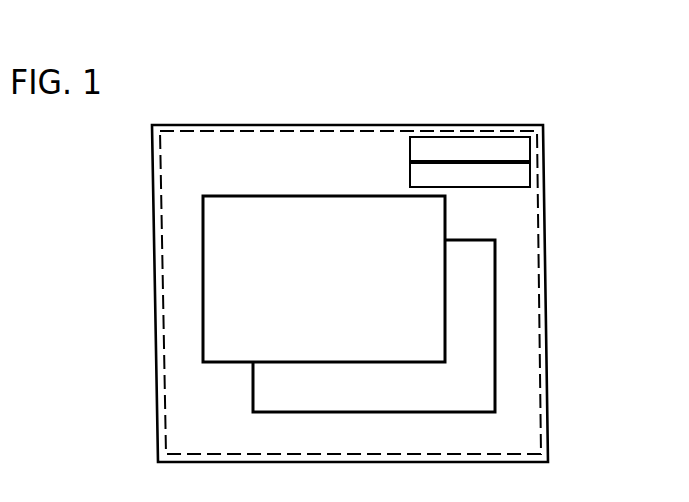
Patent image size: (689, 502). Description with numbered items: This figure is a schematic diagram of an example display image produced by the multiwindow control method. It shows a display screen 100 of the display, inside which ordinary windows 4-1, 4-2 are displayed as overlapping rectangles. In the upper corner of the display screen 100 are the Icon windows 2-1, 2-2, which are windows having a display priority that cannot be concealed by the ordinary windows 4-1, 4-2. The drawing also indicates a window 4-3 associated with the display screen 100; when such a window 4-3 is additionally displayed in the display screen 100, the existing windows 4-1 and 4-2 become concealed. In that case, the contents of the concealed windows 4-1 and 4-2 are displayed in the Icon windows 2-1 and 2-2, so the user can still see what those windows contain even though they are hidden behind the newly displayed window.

The display screen 100 is at (543, 126).
The window 4-3 is at (539, 251).
The Icon window 2-1 is at (531, 148).
The Icon window 2-2 is at (531, 176).
The window 4-1 is at (308, 195).
The window 4-2 is at (495, 338).